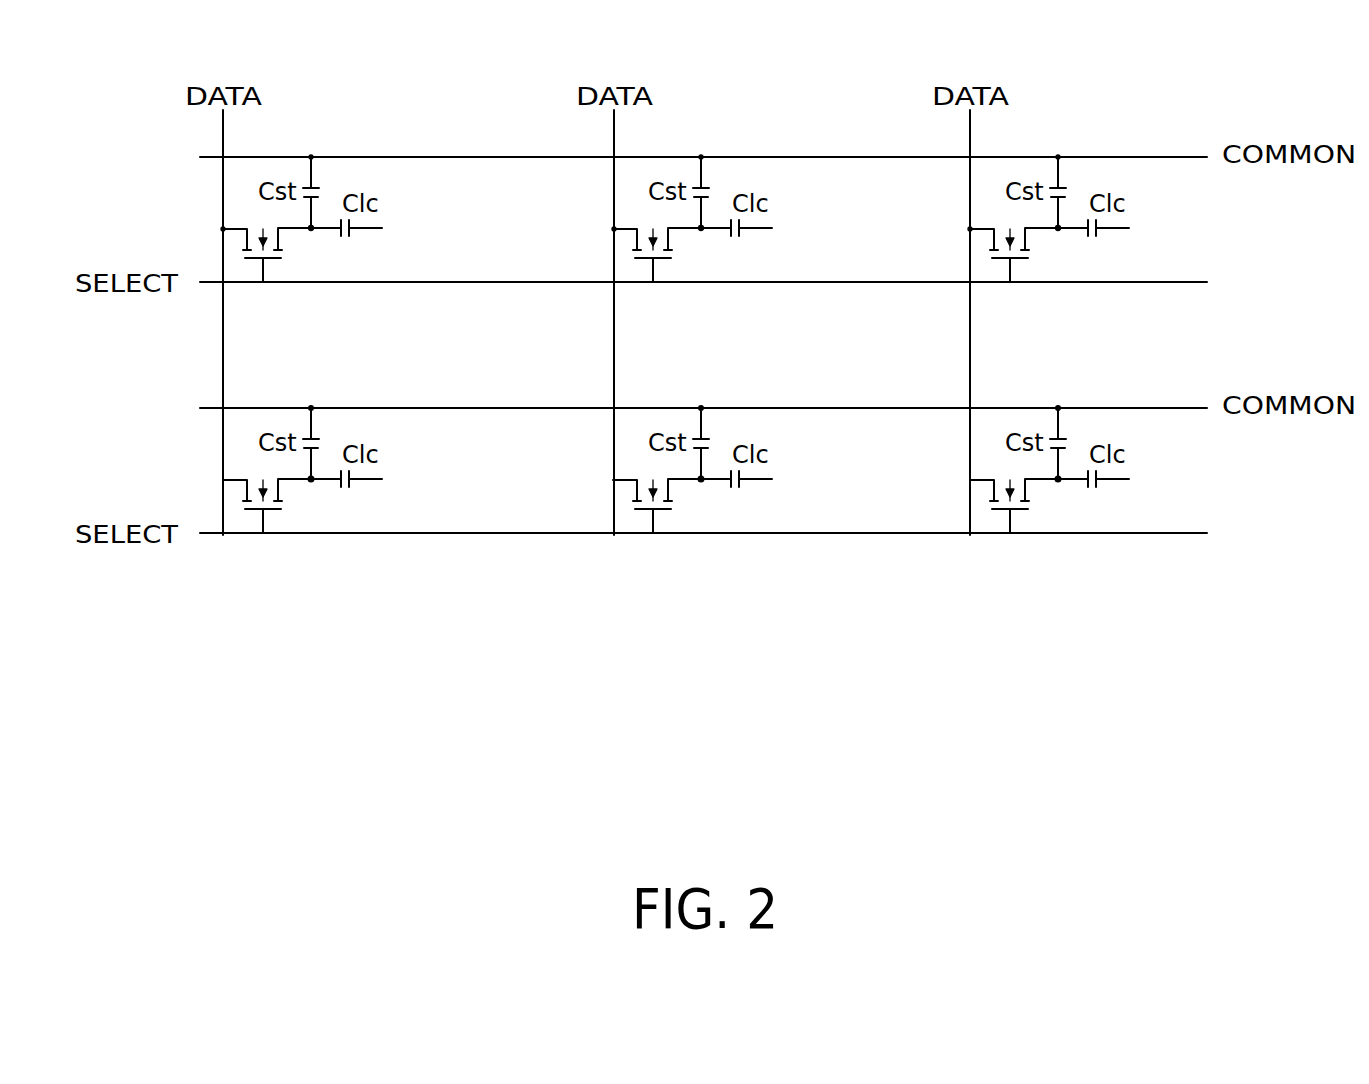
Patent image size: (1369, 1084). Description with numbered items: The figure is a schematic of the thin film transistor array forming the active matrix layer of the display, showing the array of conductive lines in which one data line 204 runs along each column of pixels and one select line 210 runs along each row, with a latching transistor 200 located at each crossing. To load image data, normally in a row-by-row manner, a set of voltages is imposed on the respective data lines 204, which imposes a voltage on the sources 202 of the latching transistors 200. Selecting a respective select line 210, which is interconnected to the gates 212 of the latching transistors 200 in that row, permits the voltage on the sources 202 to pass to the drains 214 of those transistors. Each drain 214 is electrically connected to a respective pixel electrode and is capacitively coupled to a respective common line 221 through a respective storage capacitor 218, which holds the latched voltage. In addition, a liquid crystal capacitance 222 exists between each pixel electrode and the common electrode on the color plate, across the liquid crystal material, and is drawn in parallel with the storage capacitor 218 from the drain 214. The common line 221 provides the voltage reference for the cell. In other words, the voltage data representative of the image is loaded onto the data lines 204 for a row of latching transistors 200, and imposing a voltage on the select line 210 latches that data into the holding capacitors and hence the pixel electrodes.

The latching transistor 200 is at (620, 266).
The source 202 is at (247, 233).
The data line 204 is at (223, 133).
The select line 210 is at (212, 284).
The gate 212 is at (270, 259).
The drain 214 is at (288, 227).
The Cst capacitor 218 is at (322, 192).
The common line 221 is at (397, 158).
The capacitance Clc 222 is at (349, 237).